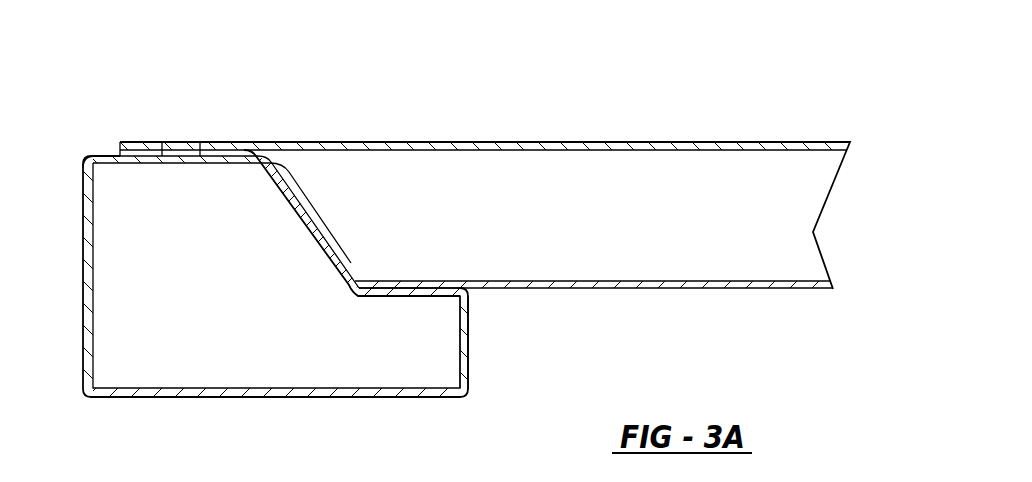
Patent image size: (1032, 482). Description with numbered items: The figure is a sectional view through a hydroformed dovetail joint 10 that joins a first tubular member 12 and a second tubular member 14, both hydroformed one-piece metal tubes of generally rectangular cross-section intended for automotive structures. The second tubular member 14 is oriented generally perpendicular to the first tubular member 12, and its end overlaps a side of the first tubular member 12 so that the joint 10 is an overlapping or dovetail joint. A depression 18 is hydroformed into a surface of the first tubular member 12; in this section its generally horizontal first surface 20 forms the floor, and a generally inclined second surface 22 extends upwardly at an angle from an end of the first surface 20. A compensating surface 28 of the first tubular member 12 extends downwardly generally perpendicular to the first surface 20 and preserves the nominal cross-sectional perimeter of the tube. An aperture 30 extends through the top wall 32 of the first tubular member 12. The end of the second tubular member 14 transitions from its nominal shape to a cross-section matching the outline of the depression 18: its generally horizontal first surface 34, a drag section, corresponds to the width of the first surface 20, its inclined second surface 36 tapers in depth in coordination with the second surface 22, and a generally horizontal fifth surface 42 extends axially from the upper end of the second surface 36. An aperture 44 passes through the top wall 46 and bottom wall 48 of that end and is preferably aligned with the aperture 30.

The hydroformed dovetail joint 10 is at (140, 100).
The first tubular member 12 is at (88, 260).
The second tubular member 14 is at (640, 143).
The depression 18 is at (342, 240).
The first surface 20 is at (403, 290).
The second surface 22 is at (344, 268).
The compensating surface 28 is at (470, 327).
The aperture 30 is at (100, 165).
The top wall 32 is at (103, 157).
The first surface 34 is at (385, 285).
The second surface 36 is at (296, 212).
The fifth surface 42 is at (212, 158).
The aperture 44 is at (166, 150).
The top wall 46 is at (132, 152).
The bottom wall 48 is at (124, 156).